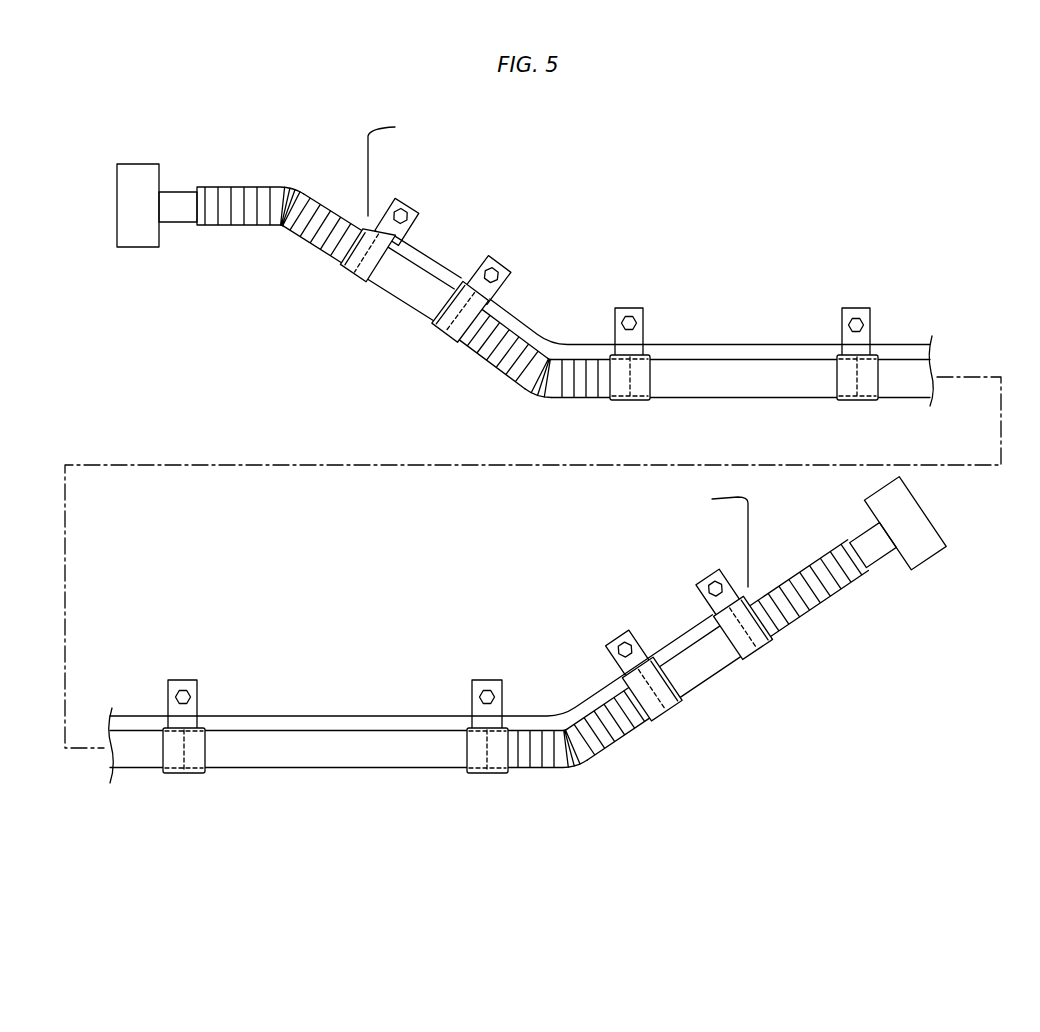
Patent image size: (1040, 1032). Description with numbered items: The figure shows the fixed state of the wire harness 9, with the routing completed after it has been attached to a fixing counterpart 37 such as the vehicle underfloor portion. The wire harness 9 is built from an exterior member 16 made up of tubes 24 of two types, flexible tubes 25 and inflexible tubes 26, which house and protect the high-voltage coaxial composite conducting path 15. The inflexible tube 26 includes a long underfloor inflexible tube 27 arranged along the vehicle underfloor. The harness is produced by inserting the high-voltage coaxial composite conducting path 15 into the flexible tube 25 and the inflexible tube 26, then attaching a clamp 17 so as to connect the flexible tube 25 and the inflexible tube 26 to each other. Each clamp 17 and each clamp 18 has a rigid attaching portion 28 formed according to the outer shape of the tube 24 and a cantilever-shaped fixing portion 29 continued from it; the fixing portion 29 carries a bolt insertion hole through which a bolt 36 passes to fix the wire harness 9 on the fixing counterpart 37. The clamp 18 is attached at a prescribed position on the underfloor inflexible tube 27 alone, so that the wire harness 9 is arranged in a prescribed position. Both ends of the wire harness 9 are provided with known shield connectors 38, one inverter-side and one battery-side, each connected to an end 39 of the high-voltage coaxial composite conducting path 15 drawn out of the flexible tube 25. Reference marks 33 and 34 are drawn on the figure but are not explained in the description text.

The wire harness 9 is at (283, 278).
The high-voltage coaxial composite conducting path 15 is at (182, 198).
The end of the high-voltage coaxial composite conducting path 39 is at (559, 368).
The exterior member 16 is at (496, 373).
The clamp 17 is at (363, 288).
The clamp 18 is at (872, 366).
The tube 24 is at (125, 292).
The flexible tube 25 is at (265, 187).
The inflexible tube 26 is at (521, 544).
The underfloor inflexible tube 27 is at (417, 283).
The rigid attaching portion 28 is at (648, 372).
The fixing portion 29 is at (643, 322).
The slit 33 is at (613, 401).
The slit 34 is at (640, 402).
The bolt 36 is at (402, 210).
The fixing counterpart 37 is at (367, 168).
The shield connector 38 is at (117, 212).